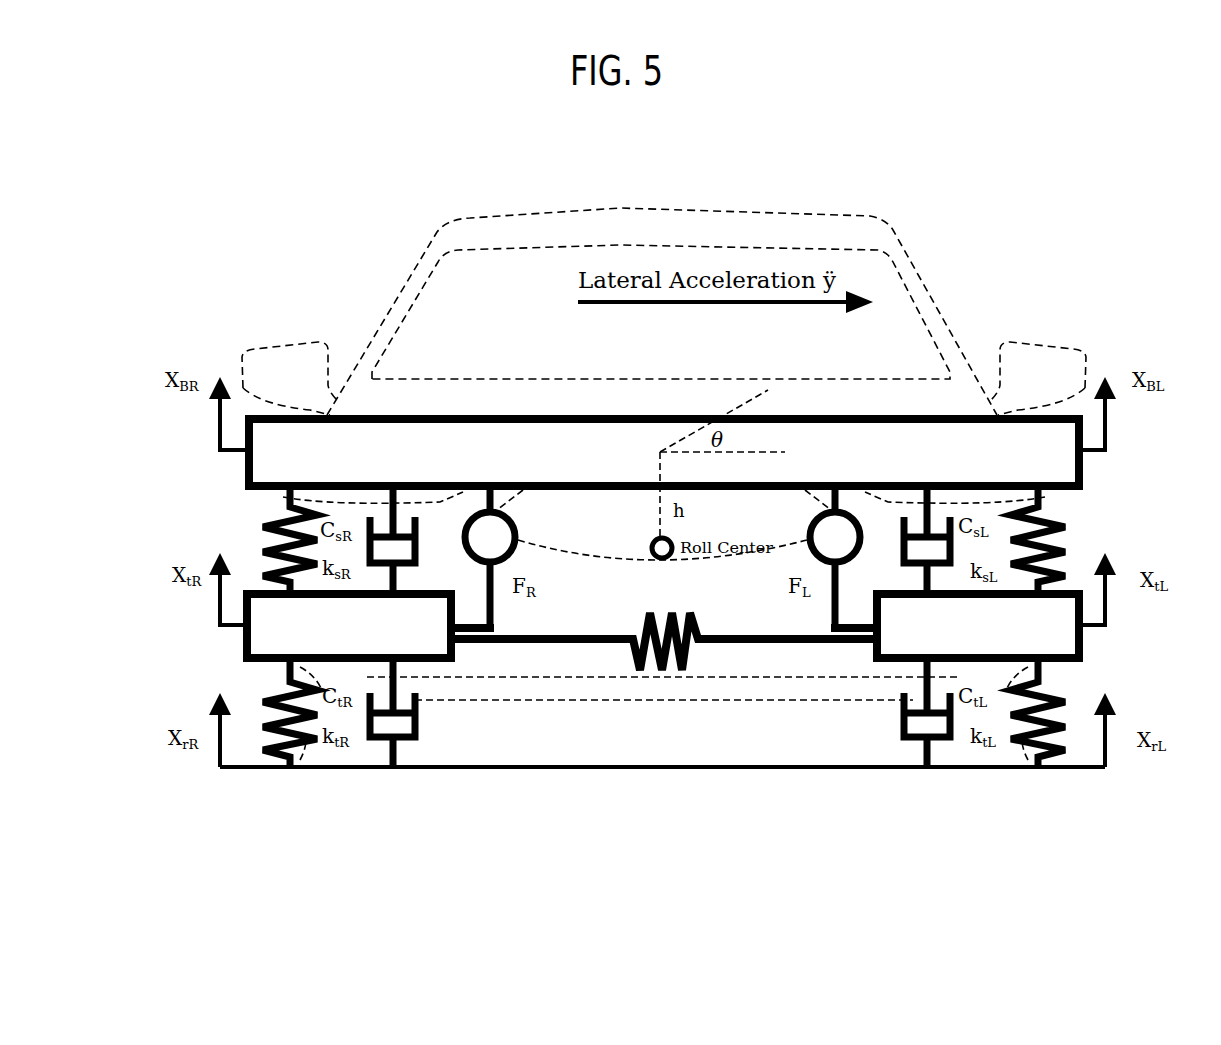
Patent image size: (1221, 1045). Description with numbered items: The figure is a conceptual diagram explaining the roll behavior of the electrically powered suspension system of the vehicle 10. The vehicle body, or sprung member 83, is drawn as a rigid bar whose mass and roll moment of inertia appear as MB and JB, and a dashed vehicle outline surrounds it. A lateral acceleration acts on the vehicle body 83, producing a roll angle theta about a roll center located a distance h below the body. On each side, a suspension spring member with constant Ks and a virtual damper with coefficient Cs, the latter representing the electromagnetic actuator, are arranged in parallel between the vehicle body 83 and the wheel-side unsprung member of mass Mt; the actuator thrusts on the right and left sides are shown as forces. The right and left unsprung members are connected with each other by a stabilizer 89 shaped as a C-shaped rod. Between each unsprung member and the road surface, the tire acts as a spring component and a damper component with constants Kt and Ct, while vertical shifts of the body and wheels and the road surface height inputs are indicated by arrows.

The vehicle 10 is at (893, 233).
The sprung member 83 is at (1083, 467).
The stabilizer 89 is at (690, 652).